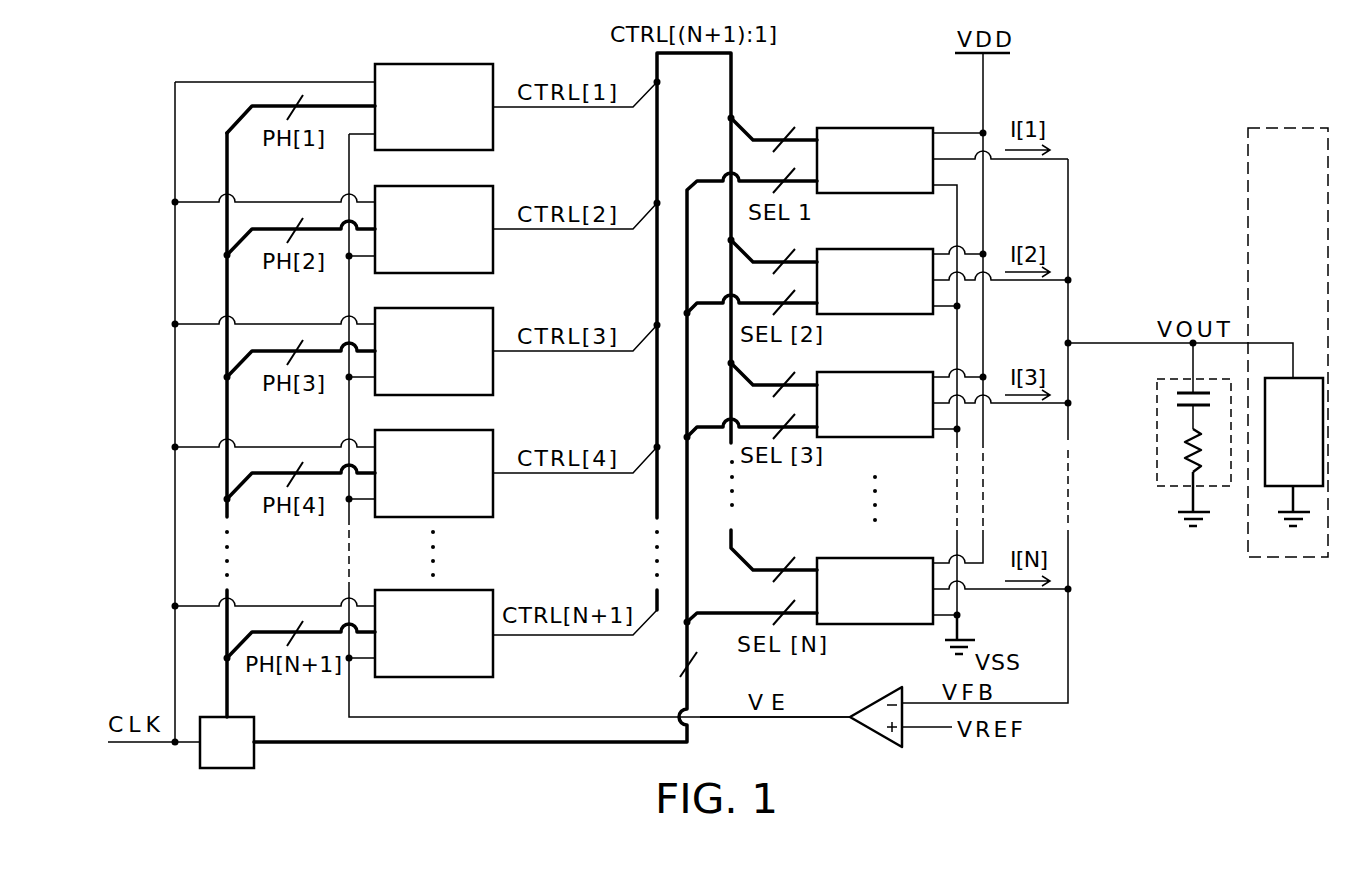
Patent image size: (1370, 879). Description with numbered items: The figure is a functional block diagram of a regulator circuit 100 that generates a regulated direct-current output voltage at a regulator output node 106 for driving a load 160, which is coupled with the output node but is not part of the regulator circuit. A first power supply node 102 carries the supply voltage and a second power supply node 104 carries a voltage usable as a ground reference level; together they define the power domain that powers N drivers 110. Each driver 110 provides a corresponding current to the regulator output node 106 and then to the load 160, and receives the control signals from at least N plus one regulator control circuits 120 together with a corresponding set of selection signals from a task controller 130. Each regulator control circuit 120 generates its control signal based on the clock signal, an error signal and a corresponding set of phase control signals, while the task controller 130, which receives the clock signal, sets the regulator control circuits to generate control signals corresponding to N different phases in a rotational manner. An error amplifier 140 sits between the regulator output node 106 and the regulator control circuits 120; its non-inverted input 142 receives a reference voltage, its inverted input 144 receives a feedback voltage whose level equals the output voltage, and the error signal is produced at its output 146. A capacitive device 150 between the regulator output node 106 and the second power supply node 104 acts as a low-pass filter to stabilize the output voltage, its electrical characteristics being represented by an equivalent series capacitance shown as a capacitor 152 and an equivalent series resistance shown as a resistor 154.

The regulator circuit 100 is at (1250, 50).
The first power supply node 102 is at (975, 54).
The second power supply node 104 is at (963, 627).
The regulator output node 106 is at (1070, 342).
The driver 110 is at (875, 376).
The regulator control circuit 120 is at (434, 370).
The task controller 130 is at (227, 742).
The error amplifier 140 is at (876, 738).
The non-inverted input 142 is at (904, 742).
The inverted input 144 is at (904, 690).
The output 146 is at (767, 720).
The capacitive device 150 is at (1155, 477).
The capacitor 152 is at (1170, 400).
The resistor 154 is at (1183, 450).
The load 160 is at (1303, 378).